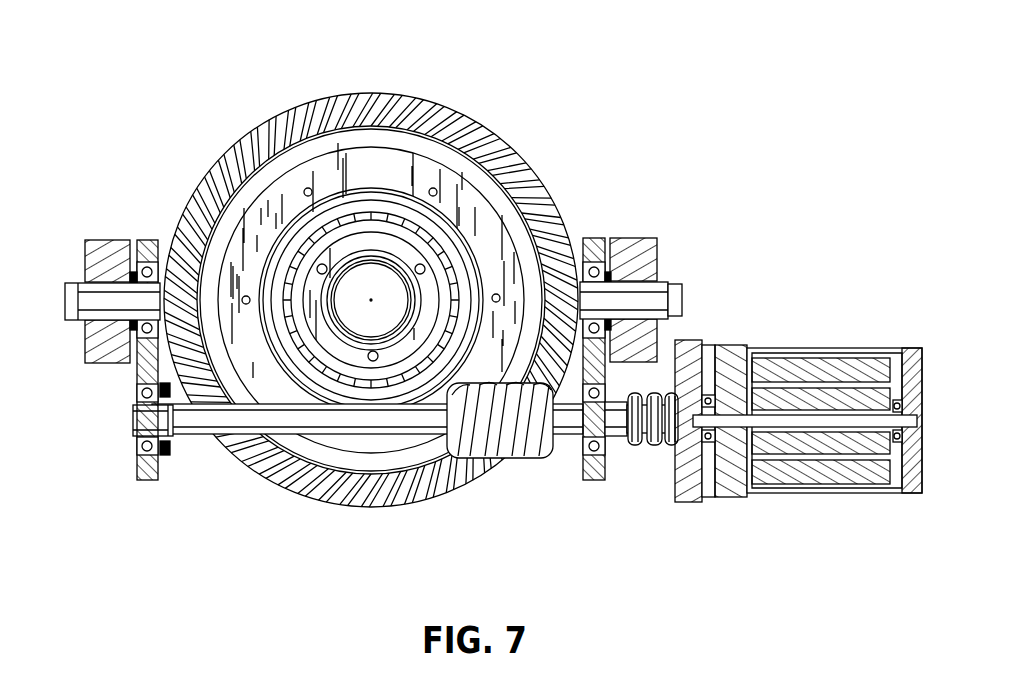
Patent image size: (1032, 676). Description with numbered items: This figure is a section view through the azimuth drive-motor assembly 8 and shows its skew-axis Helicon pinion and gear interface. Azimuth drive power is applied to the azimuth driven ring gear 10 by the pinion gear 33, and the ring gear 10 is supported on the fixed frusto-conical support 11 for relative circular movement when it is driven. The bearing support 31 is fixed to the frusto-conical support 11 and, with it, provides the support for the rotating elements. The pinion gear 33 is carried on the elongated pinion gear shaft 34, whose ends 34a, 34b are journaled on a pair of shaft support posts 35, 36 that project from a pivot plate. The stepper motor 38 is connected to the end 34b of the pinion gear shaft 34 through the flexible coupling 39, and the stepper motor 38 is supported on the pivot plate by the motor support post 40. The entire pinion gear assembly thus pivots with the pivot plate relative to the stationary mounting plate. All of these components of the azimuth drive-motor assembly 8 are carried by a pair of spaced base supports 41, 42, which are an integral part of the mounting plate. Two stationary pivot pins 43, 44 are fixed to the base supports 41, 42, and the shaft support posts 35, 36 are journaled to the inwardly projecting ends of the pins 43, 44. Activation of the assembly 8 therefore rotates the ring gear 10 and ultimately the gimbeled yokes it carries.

The azimuth drive-motor assembly 8 is at (463, 512).
The azimuth driven ring gear 10 is at (453, 110).
The frusto-conical support 11 is at (367, 213).
The bearing support 31 is at (400, 265).
The pinion gear 33 is at (490, 448).
The pinion gear shaft 34 is at (313, 418).
The end of pinion gear shaft 34a is at (150, 417).
The end of pinion gear shaft 34b is at (583, 428).
The shaft support post 35 is at (140, 372).
The shaft support post 36 is at (592, 238).
The stepper motor 38 is at (820, 385).
The flexible coupling 39 is at (653, 443).
The motor support post 40 is at (697, 340).
The base support 41 is at (120, 240).
The base support 42 is at (640, 238).
The stationary pivot pin 43 is at (66, 303).
The stationary pivot pin 44 is at (683, 288).